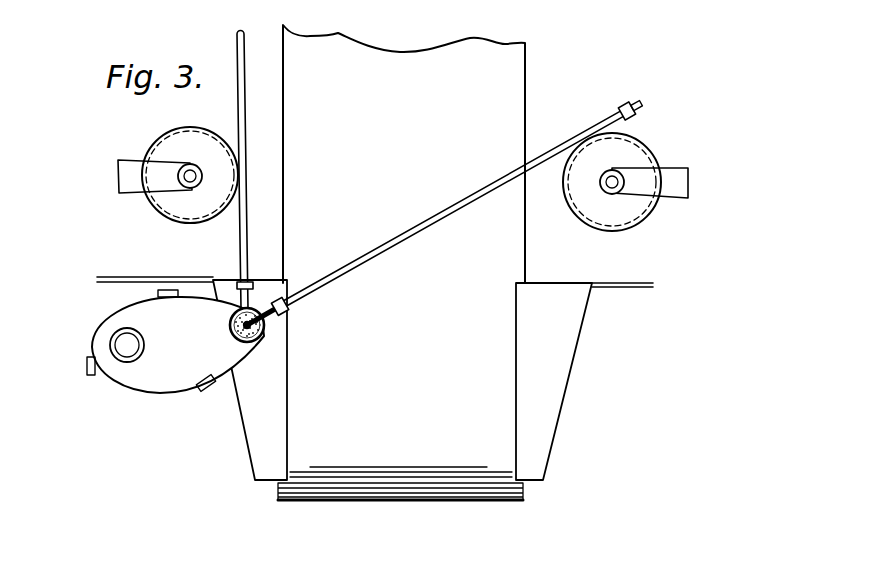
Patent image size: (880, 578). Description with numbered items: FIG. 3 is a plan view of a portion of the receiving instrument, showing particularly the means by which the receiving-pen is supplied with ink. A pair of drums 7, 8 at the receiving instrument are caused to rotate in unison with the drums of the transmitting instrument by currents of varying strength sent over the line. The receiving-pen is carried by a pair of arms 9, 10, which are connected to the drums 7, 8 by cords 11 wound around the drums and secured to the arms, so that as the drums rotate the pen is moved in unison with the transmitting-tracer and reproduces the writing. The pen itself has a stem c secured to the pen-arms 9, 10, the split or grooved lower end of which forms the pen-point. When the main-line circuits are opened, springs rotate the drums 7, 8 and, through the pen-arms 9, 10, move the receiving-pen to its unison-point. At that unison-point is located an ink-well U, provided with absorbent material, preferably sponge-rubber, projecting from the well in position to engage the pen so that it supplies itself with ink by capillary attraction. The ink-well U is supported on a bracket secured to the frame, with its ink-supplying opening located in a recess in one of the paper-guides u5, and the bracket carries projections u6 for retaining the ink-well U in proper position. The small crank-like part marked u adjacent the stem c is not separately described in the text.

The drum 7 is at (178, 175).
The drum 8 is at (625, 182).
The pen-arm 9 is at (248, 194).
The pen-arm 10 is at (458, 209).
The cord 11 is at (234, 109).
The stem c is at (232, 326).
The crank arm u is at (238, 341).
The ink-well U is at (178, 345).
The paper-guide u5 is at (402, 380).
The projections u6 is at (158, 293).